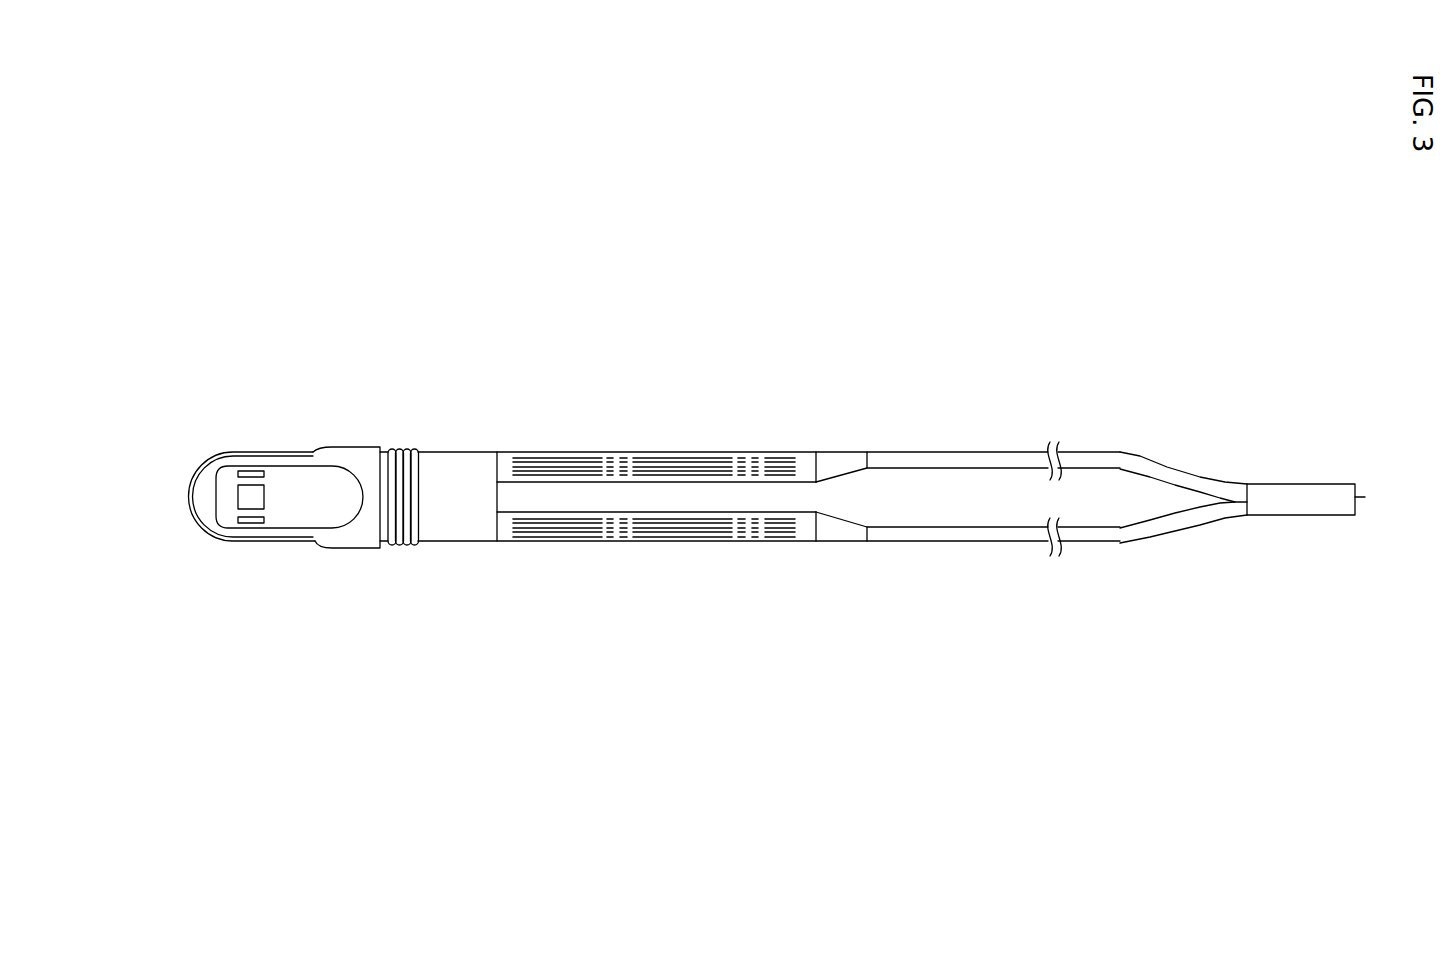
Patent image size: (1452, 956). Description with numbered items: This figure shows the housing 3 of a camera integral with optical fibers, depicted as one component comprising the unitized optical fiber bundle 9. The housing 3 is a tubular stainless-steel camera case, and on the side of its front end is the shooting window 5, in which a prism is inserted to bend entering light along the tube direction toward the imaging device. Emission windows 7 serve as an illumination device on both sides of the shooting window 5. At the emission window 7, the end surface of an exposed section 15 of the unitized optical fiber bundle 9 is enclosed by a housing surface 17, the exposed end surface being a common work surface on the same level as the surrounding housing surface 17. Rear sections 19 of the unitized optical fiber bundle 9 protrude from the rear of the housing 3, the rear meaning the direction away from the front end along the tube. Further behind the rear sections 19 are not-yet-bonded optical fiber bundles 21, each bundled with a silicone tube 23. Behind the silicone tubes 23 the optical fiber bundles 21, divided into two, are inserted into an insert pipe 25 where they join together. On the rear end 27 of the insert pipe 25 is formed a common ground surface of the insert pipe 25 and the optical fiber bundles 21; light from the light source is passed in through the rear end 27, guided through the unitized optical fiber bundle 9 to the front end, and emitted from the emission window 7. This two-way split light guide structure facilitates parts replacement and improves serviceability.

The housing 3 is at (203, 492).
The shooting window 5 is at (245, 495).
The emission window 7 is at (226, 455).
The unitized optical fiber bundle 9 is at (531, 426).
The exposed section 15 is at (255, 473).
The housing surface 17 is at (295, 507).
The rear section 19 is at (578, 458).
The optical fiber bundle 21 is at (840, 463).
The silicone tube 23 is at (960, 457).
The insert pipe 25 is at (1300, 495).
The rear end 27 is at (1365, 497).